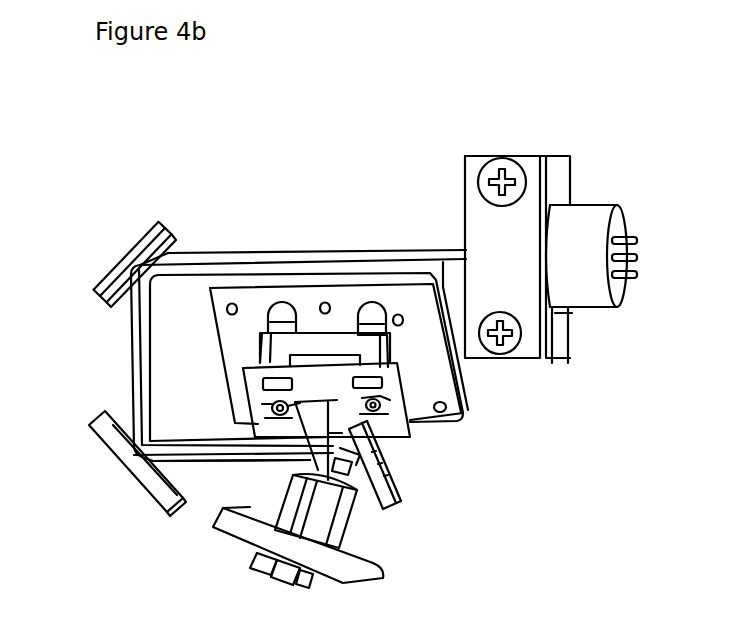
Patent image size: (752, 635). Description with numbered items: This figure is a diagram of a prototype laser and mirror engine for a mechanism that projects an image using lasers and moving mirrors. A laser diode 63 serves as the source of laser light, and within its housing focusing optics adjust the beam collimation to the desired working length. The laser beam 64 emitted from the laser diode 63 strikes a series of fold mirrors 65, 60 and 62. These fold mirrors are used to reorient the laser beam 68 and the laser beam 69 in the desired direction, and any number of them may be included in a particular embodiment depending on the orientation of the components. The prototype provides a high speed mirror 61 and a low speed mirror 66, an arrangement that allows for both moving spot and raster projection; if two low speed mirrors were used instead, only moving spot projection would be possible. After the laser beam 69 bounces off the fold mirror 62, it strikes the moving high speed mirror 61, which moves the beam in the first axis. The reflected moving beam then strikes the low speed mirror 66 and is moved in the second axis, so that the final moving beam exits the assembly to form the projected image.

The fold mirror 60 is at (147, 477).
The high speed mirror 61 is at (288, 547).
The fold mirror 62 is at (395, 481).
The laser diode 63 is at (584, 280).
The laser beam 64 is at (283, 262).
The fold mirror 65 is at (143, 231).
The low speed mirror 66 is at (335, 340).
The laser beam 68 is at (238, 455).
The laser beam 69 is at (378, 562).